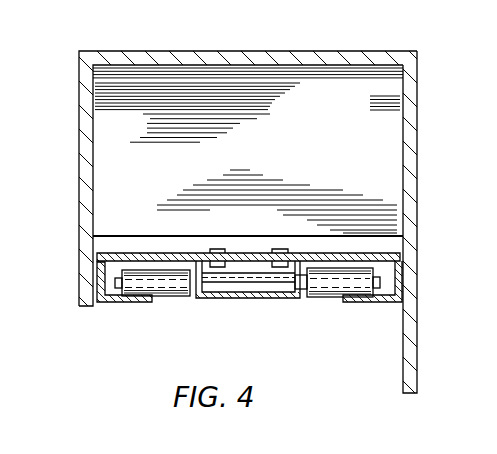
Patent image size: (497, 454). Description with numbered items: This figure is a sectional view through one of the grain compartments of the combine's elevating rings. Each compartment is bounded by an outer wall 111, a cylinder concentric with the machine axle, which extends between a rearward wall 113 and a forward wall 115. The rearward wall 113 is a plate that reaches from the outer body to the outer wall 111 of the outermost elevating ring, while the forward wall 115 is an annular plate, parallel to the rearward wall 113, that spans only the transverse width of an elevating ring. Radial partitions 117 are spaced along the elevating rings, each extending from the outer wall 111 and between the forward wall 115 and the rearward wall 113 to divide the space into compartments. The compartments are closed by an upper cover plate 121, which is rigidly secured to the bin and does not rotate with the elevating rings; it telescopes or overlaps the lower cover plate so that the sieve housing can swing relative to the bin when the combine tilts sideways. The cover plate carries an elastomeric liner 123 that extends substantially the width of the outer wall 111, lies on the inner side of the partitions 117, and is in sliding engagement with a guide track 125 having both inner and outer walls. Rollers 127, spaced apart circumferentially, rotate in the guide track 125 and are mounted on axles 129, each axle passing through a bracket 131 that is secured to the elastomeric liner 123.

The outer wall 111 is at (360, 66).
The rearward wall 113 is at (417, 160).
The forward wall 115 is at (93, 158).
The radial partitions 117 is at (123, 200).
The upper cover plate 121 is at (378, 247).
The elastomeric liner 123 is at (226, 250).
The guide track 125 is at (373, 300).
The rollers 127 is at (171, 299).
The axles 129 is at (243, 275).
The bracket 131 is at (277, 299).